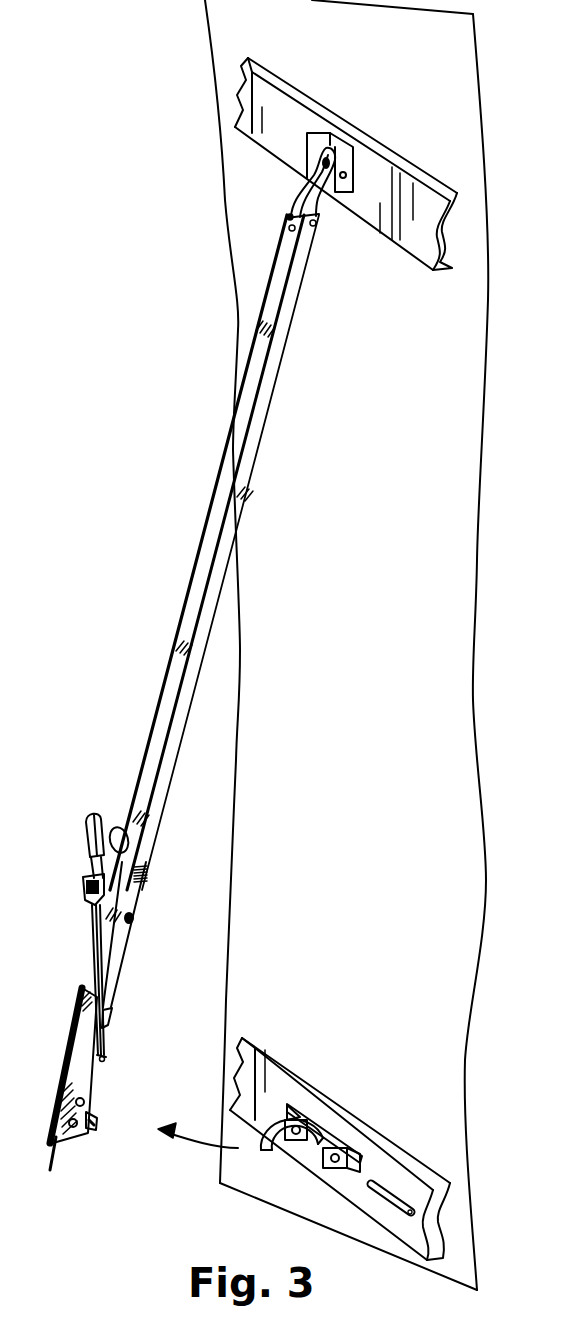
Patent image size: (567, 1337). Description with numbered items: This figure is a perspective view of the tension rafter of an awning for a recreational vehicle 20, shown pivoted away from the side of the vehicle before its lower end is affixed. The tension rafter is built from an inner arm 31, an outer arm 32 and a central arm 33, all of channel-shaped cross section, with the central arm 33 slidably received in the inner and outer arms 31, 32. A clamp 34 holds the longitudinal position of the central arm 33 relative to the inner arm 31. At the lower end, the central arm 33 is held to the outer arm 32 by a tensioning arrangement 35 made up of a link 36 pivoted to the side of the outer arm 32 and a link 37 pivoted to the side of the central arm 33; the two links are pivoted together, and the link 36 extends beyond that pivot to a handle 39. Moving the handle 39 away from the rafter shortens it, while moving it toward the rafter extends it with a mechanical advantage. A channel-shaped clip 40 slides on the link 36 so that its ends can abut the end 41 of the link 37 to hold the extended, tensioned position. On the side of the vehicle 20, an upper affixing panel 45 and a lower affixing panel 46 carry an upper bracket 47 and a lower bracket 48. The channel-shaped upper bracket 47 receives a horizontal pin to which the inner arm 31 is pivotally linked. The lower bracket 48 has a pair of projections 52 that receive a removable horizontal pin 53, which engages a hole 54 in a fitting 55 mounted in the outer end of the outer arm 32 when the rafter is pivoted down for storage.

The recreational vehicle 20 is at (250, 225).
The inner arm 31 is at (228, 533).
The outer arm 32 is at (100, 1070).
The central arm 33 is at (137, 885).
The clamp 34 is at (116, 820).
The tensioning arrangement 35 is at (66, 960).
The link 36 is at (107, 1020).
The link 37 is at (123, 972).
The handle 39 is at (84, 832).
The clip 40 is at (88, 890).
The end 41 is at (131, 920).
The upper affixing panel 45 is at (353, 203).
The lower affixing panel 46 is at (268, 1040).
The upper bracket 47 is at (347, 182).
The lower bracket 48 is at (323, 1130).
The projections 52 is at (288, 1155).
The pin 53 is at (420, 1185).
The hole 54 is at (97, 1123).
The fitting 55 is at (45, 1133).